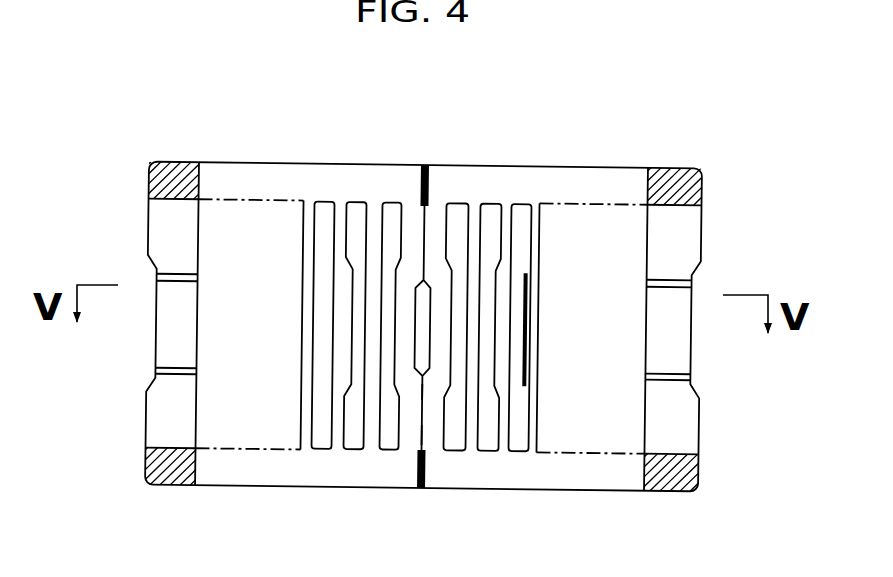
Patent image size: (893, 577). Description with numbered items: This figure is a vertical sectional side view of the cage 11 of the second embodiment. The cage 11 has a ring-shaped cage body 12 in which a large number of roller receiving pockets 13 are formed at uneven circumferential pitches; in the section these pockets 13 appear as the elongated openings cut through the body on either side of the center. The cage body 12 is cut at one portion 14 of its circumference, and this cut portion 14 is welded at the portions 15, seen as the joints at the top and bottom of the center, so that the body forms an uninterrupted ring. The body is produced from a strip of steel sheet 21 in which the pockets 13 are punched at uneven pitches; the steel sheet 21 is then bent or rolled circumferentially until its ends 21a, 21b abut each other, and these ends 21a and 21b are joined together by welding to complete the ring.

The cage 11 is at (694, 158).
The cage body 12 is at (157, 160).
The roller receiving pockets 13 is at (163, 418).
The cut portion 14 is at (421, 217).
The welded portions 15 is at (427, 185).
The steel sheet 21 is at (578, 188).
The end of steel sheet 21a is at (416, 426).
The end of steel sheet 21b is at (425, 387).